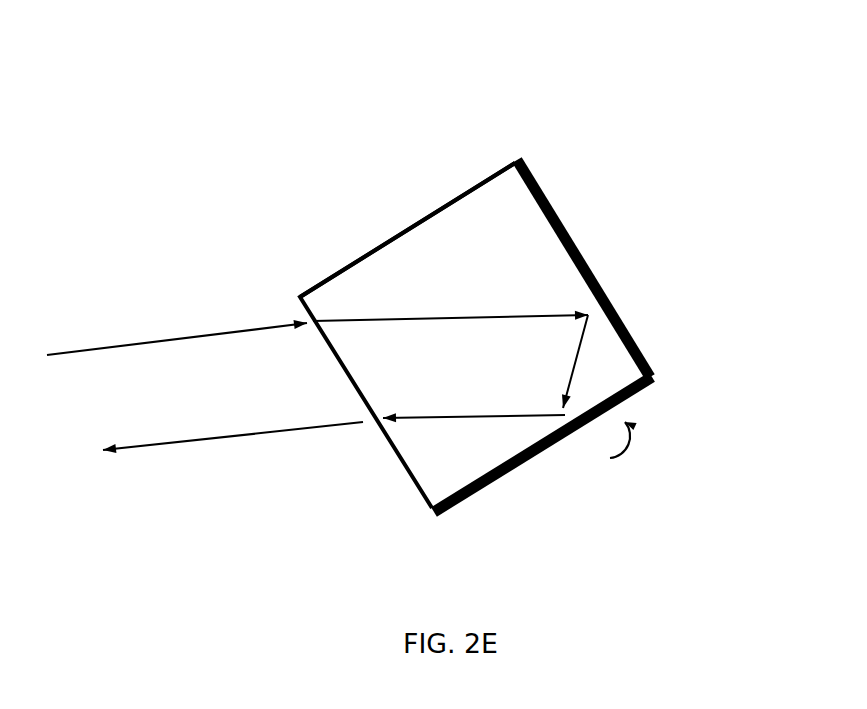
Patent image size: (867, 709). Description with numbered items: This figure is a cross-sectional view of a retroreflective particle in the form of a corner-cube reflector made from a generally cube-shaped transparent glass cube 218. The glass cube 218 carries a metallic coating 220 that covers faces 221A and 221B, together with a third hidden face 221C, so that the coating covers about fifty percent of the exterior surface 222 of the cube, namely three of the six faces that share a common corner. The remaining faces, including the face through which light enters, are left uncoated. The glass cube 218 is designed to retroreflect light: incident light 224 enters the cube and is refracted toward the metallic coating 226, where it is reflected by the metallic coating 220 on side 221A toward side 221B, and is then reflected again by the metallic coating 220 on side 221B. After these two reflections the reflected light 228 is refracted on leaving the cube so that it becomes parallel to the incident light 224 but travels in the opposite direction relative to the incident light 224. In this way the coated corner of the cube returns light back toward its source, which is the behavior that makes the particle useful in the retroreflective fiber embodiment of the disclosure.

The glass cube 218 is at (355, 248).
The metallic coating 220 is at (577, 255).
The side 221A is at (563, 232).
The side 221B is at (547, 447).
The third hidden face 221C is at (663, 454).
The exterior surface 222 is at (482, 170).
The incident light 224 is at (155, 340).
The metallic coating 226 is at (437, 317).
The reflected light 228 is at (470, 418).